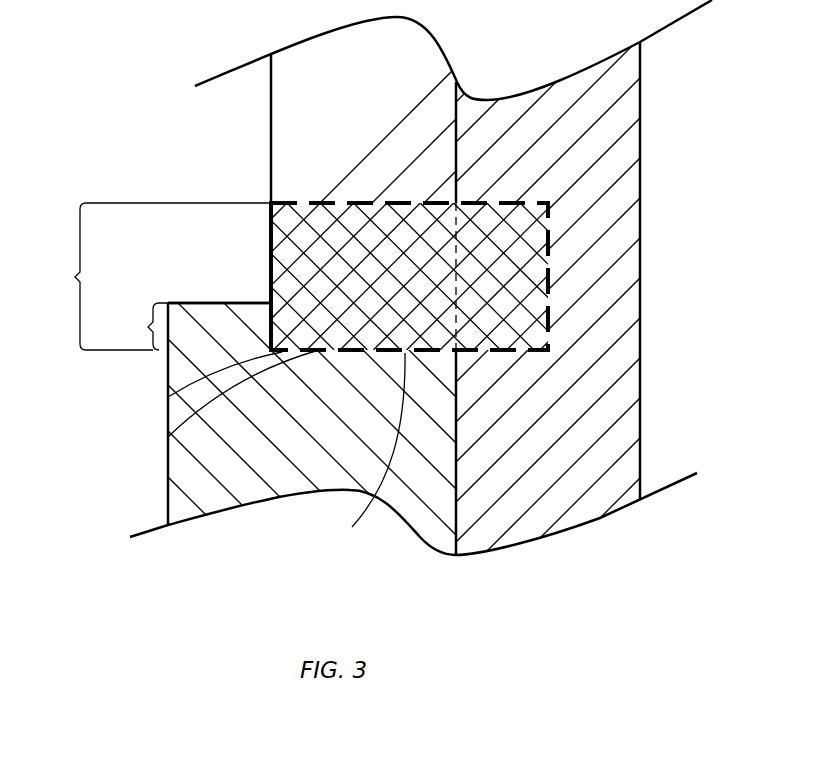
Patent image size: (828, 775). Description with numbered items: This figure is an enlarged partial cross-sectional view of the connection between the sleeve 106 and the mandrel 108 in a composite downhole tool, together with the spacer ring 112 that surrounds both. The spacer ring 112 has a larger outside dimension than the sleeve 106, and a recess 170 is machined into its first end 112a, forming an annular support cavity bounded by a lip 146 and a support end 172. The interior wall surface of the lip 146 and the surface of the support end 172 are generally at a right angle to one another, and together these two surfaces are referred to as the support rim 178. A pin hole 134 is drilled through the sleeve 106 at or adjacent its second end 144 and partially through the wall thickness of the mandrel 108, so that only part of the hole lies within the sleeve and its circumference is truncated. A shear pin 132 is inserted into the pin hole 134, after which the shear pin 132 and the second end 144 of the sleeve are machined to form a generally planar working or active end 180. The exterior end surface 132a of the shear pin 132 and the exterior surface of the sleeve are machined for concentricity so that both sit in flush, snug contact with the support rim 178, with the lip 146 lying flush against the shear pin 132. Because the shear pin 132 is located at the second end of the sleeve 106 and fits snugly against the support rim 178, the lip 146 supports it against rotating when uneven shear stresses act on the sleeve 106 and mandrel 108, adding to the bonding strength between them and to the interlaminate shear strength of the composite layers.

The sleeve 106 is at (387, 141).
The mandrel 108 is at (590, 141).
The spacer ring 112 is at (347, 458).
The shear pin 132 is at (384, 282).
The exterior end surface of the shear pin 132a is at (271, 232).
The recess 170 is at (352, 343).
The support rim 178 is at (271, 320).
The first end of the spacer ring 112a is at (172, 303).
The pin hole 134 is at (150, 276).
The lip 146 is at (133, 326).
The second end of the sleeve 144 is at (168, 397).
The active end 180 is at (168, 437).
The support end 172 is at (354, 447).